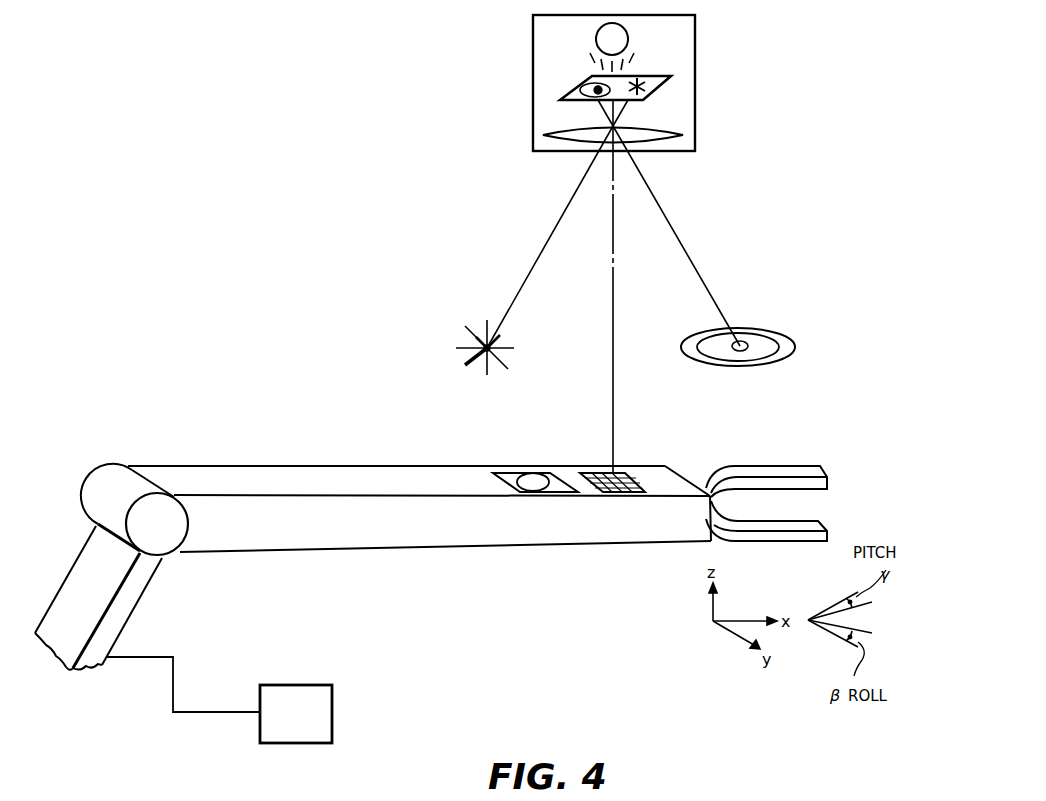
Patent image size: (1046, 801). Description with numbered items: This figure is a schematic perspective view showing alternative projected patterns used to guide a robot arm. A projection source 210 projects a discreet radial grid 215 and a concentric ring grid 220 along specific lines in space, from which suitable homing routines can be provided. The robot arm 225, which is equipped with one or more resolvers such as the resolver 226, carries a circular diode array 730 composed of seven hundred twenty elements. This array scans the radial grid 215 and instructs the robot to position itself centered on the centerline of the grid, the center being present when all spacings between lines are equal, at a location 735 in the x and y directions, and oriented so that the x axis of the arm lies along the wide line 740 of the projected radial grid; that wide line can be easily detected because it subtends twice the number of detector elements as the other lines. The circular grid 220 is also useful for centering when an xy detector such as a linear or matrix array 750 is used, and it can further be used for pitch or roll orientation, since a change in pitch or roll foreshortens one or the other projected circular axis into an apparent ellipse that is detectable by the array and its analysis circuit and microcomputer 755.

The projection source 210 is at (695, 88).
The radial grid 215 is at (496, 355).
The concentric ring grid 220 is at (791, 339).
The robot arm 225 is at (418, 534).
The resolver 226 is at (181, 552).
The circular diode array 730 is at (548, 492).
The x,y position of light spot 735 is at (487, 348).
The wide line 740 is at (493, 341).
The linear or matrix array 750 is at (642, 492).
The microcomputer 755 is at (316, 731).